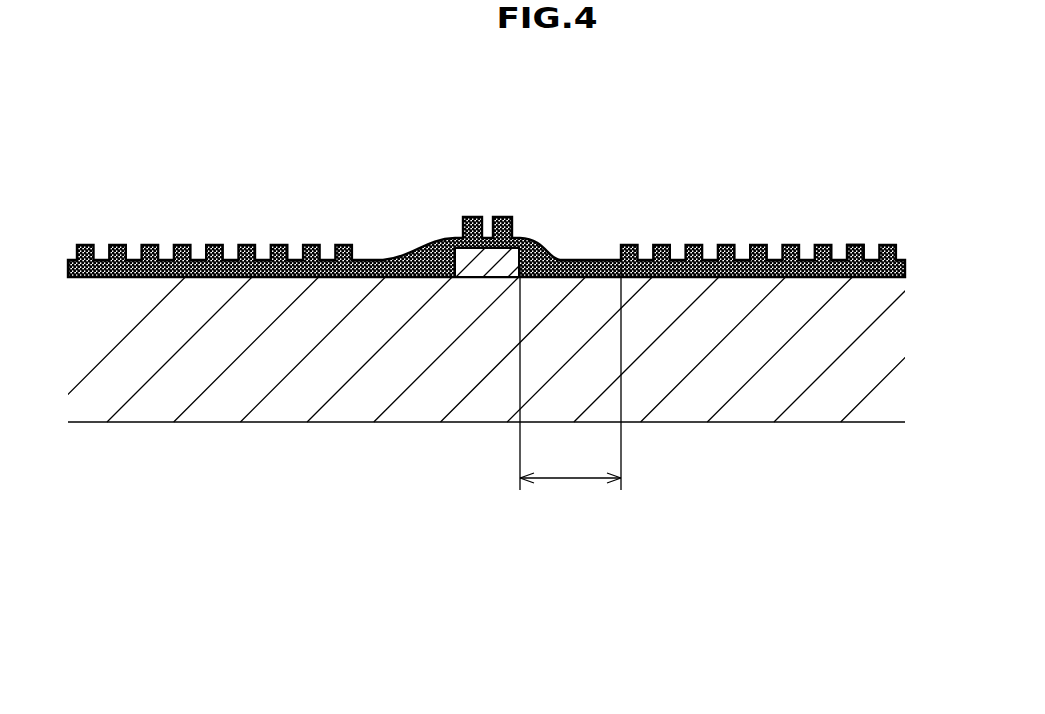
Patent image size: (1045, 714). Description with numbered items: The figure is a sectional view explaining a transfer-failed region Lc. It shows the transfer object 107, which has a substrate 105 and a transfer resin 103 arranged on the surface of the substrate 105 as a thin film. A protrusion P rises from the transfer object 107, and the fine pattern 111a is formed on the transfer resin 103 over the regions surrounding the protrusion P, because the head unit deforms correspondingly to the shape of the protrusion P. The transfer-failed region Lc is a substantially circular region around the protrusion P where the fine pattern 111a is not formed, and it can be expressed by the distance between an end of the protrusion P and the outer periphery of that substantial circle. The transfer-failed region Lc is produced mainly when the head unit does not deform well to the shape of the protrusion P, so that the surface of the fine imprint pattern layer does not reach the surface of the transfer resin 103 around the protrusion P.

The transfer resin 103 is at (212, 262).
The substrate 105 is at (262, 297).
The transfer object 107 is at (203, 175).
The fine pattern 111a is at (845, 242).
The protrusion P is at (496, 266).
The transfer-failed region Lc is at (570, 377).